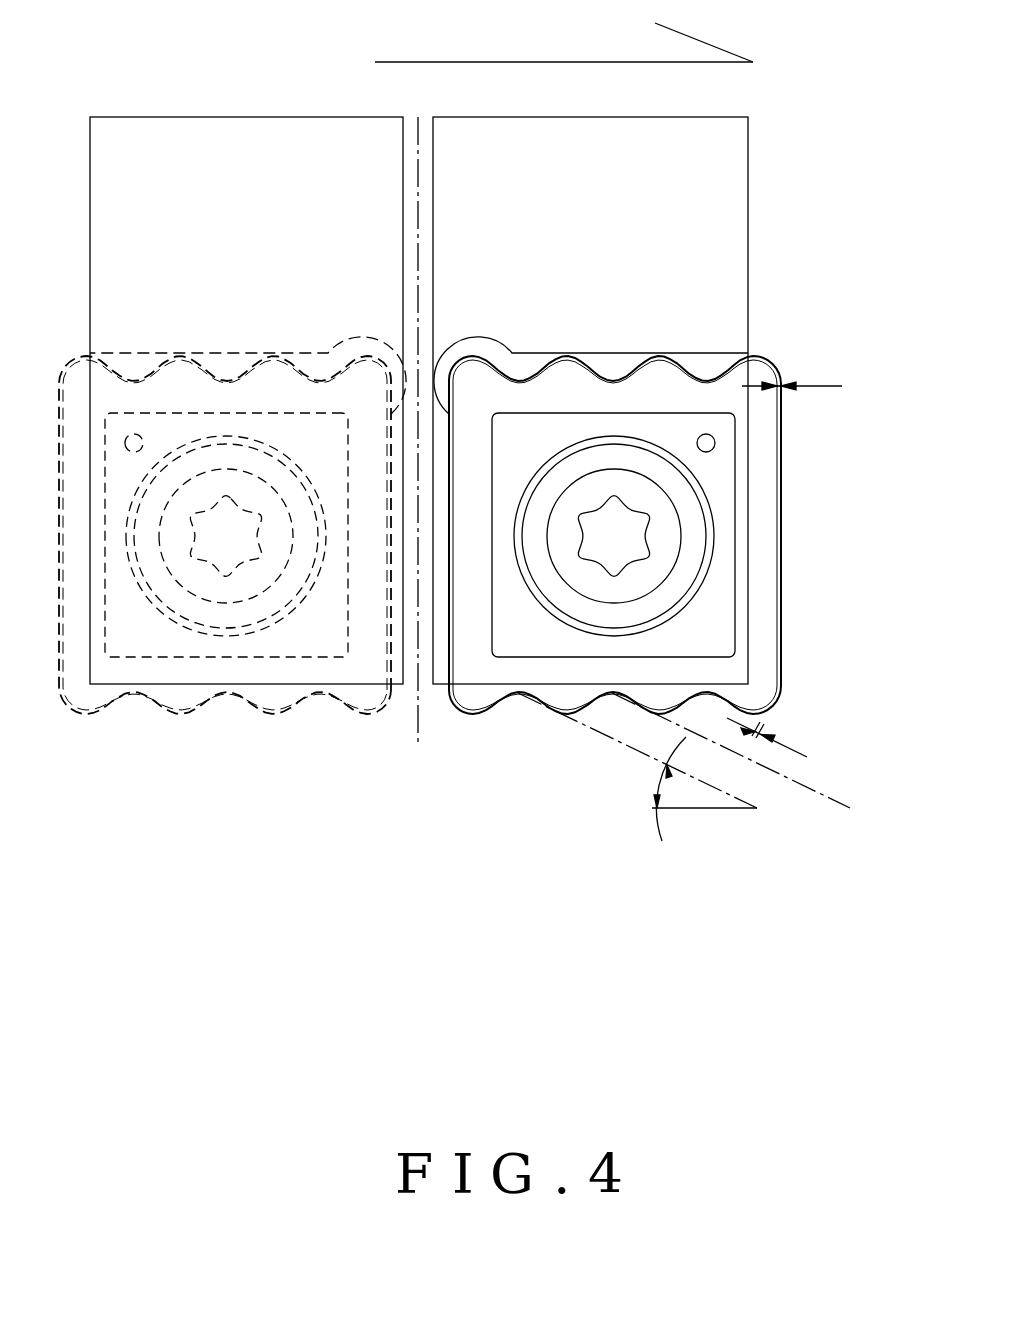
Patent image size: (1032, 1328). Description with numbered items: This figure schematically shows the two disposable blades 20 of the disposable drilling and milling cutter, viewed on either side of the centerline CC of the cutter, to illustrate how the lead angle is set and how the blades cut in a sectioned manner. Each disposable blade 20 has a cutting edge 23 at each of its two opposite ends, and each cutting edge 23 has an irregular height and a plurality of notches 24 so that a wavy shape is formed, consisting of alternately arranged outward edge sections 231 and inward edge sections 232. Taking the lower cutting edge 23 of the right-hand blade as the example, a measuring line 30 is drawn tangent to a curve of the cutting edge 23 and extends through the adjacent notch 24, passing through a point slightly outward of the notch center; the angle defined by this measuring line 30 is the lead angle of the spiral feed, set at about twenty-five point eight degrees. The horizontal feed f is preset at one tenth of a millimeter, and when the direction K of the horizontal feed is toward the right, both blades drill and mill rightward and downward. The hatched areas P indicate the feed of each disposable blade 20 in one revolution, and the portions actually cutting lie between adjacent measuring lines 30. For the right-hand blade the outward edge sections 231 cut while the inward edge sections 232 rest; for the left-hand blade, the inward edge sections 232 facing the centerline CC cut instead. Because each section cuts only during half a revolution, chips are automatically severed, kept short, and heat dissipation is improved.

The disposable blade 20 is at (665, 392).
The cutting edge 23 is at (180, 697).
The outward edge section 231 is at (157, 702).
The inward edge section 232 is at (198, 713).
The notch 24 is at (518, 695).
The measuring line 30 is at (622, 743).
The hatched area P is at (495, 712).
The centerline CC is at (417, 295).
The direction of horizontal feed K is at (586, 45).
The horizontal feed f is at (784, 558).